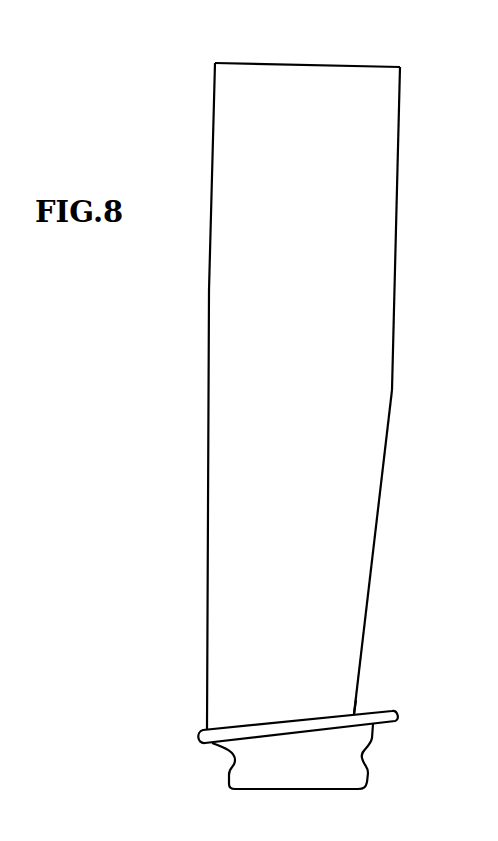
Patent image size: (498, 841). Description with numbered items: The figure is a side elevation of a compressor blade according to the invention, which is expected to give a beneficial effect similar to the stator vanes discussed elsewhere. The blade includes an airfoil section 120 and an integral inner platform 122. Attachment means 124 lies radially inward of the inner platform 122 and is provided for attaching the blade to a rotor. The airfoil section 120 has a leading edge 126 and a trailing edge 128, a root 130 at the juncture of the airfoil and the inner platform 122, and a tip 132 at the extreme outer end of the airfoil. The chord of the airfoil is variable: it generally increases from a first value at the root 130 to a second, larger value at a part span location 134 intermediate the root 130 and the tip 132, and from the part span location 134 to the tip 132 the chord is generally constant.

The airfoil section 120 is at (302, 377).
The integral inner platform 122 is at (365, 702).
The attachment means 124 is at (287, 777).
The leading edge 126 is at (210, 422).
The trailing edge 128 is at (395, 234).
The root 130 is at (268, 722).
The tip 132 is at (238, 62).
The part span location 134 is at (392, 397).